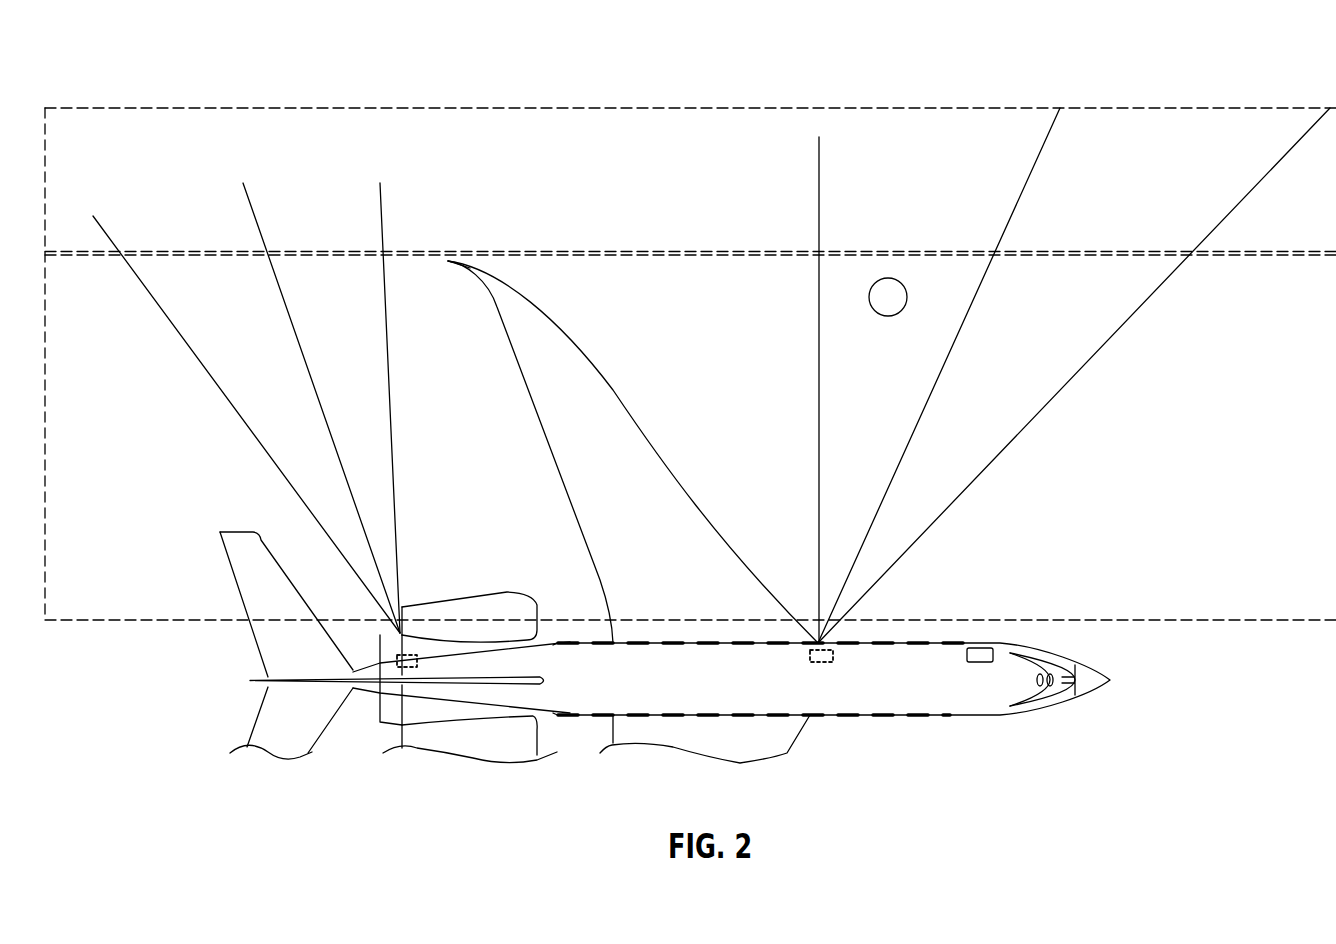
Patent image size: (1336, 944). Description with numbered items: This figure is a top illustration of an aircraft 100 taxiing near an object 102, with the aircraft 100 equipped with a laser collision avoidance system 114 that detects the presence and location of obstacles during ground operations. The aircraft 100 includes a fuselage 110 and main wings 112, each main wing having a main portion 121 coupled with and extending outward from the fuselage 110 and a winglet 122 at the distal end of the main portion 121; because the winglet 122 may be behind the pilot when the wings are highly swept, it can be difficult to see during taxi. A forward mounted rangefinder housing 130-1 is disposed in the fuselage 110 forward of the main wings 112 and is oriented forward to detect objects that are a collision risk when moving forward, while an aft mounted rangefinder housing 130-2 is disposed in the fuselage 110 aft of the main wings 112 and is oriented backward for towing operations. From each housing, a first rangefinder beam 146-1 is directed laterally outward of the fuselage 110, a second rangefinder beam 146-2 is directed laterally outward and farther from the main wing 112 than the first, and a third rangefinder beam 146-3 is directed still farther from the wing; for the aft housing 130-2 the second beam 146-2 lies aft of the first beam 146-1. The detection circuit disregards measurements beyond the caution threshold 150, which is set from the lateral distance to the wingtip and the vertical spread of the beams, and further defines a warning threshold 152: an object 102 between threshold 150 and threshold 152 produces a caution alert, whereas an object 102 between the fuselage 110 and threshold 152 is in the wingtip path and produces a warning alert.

The aircraft 100 is at (1042, 776).
The object 102 is at (886, 278).
The fuselage 110 is at (916, 716).
The main wings 112 is at (624, 391).
The collision avoidance system 114 is at (830, 657).
The main portion 121 is at (647, 445).
The winglet 122 is at (468, 276).
The forward mounted rangefinder housing 130-1 is at (815, 660).
The aft mounted rangefinder housing 130-2 is at (417, 640).
The first rangefinder beam 146-1 is at (391, 413).
The second rangefinder beam 146-2 is at (290, 318).
The third rangefinder beam 146-3 is at (172, 320).
The threshold 150 is at (663, 108).
The warning threshold 152 is at (660, 253).